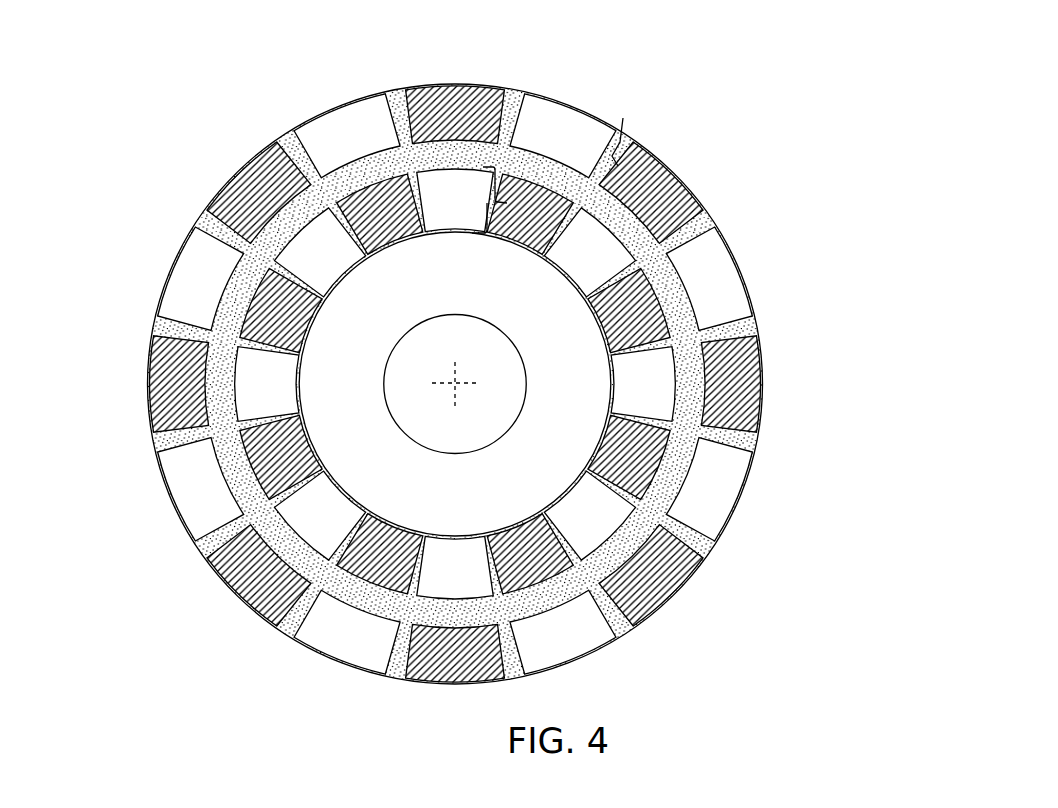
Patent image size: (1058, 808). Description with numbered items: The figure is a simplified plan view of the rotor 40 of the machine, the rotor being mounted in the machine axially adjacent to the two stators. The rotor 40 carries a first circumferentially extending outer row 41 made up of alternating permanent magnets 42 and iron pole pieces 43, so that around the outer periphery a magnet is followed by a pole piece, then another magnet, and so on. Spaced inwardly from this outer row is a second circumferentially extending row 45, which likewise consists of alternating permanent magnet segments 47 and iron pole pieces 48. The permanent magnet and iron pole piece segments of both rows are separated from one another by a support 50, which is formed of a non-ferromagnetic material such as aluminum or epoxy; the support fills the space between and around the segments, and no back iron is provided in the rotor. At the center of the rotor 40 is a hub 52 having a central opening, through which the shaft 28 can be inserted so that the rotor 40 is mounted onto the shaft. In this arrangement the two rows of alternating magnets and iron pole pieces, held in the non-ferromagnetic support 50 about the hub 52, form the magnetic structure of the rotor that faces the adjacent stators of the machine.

The shaft 28 is at (508, 428).
The rotor 40 is at (162, 516).
The outer row 41 is at (617, 163).
The permanent magnets 42 is at (427, 88).
The iron pole pieces 43 is at (176, 462).
The second row 45 is at (507, 203).
The permanent magnet segments 47 is at (636, 492).
The iron pole pieces 48 is at (425, 587).
The support 50 is at (232, 238).
The hub 52 is at (592, 359).